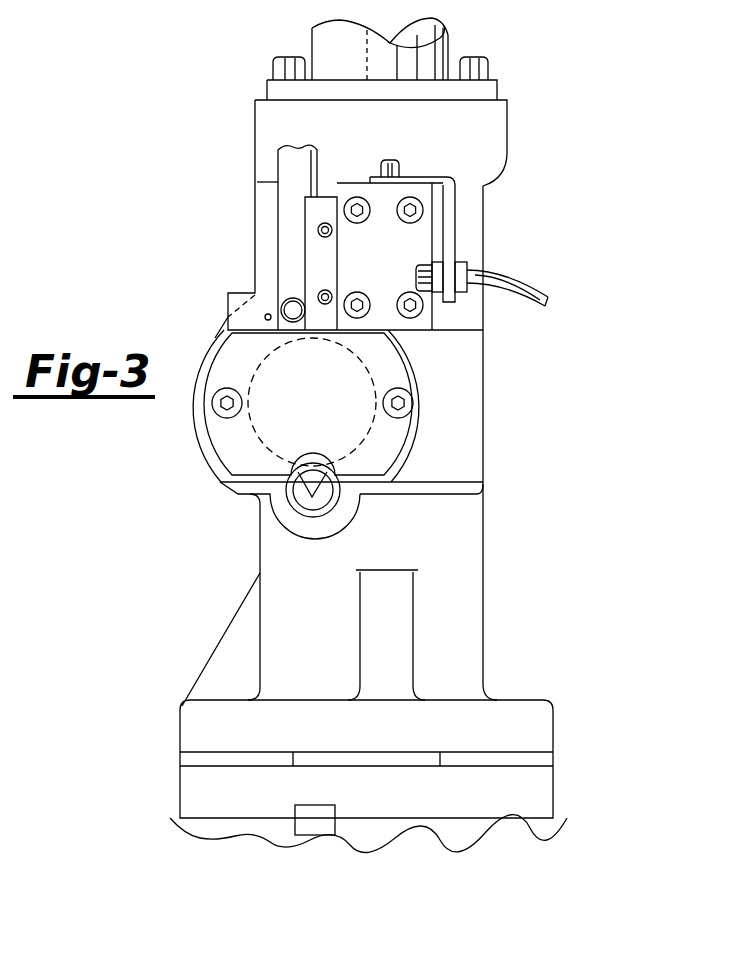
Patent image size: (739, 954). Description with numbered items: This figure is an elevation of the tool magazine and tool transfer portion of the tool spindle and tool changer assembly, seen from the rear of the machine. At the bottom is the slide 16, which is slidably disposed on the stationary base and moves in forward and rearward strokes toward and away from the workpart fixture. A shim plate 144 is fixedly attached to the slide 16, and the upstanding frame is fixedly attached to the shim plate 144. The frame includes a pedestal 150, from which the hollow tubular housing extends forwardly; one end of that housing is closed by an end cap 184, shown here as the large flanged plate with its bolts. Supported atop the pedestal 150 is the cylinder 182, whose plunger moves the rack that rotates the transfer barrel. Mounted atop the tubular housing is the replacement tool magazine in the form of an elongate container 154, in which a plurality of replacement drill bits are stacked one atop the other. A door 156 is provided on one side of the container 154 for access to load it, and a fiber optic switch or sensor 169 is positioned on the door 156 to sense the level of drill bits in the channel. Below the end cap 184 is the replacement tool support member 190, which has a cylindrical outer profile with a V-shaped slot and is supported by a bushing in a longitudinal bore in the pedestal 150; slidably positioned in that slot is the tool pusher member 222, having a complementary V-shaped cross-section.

The slide 16 is at (547, 823).
The shim plate 144 is at (547, 785).
The pedestal 150 is at (470, 585).
The elongate container 154 is at (287, 170).
The door 156 is at (313, 172).
The fiber optic switch or sensor 169 is at (440, 230).
The cylinder 182 is at (440, 33).
The end cap 184 is at (228, 437).
The replacement tool support member 190 is at (300, 500).
The tool pusher member 222 is at (327, 500).